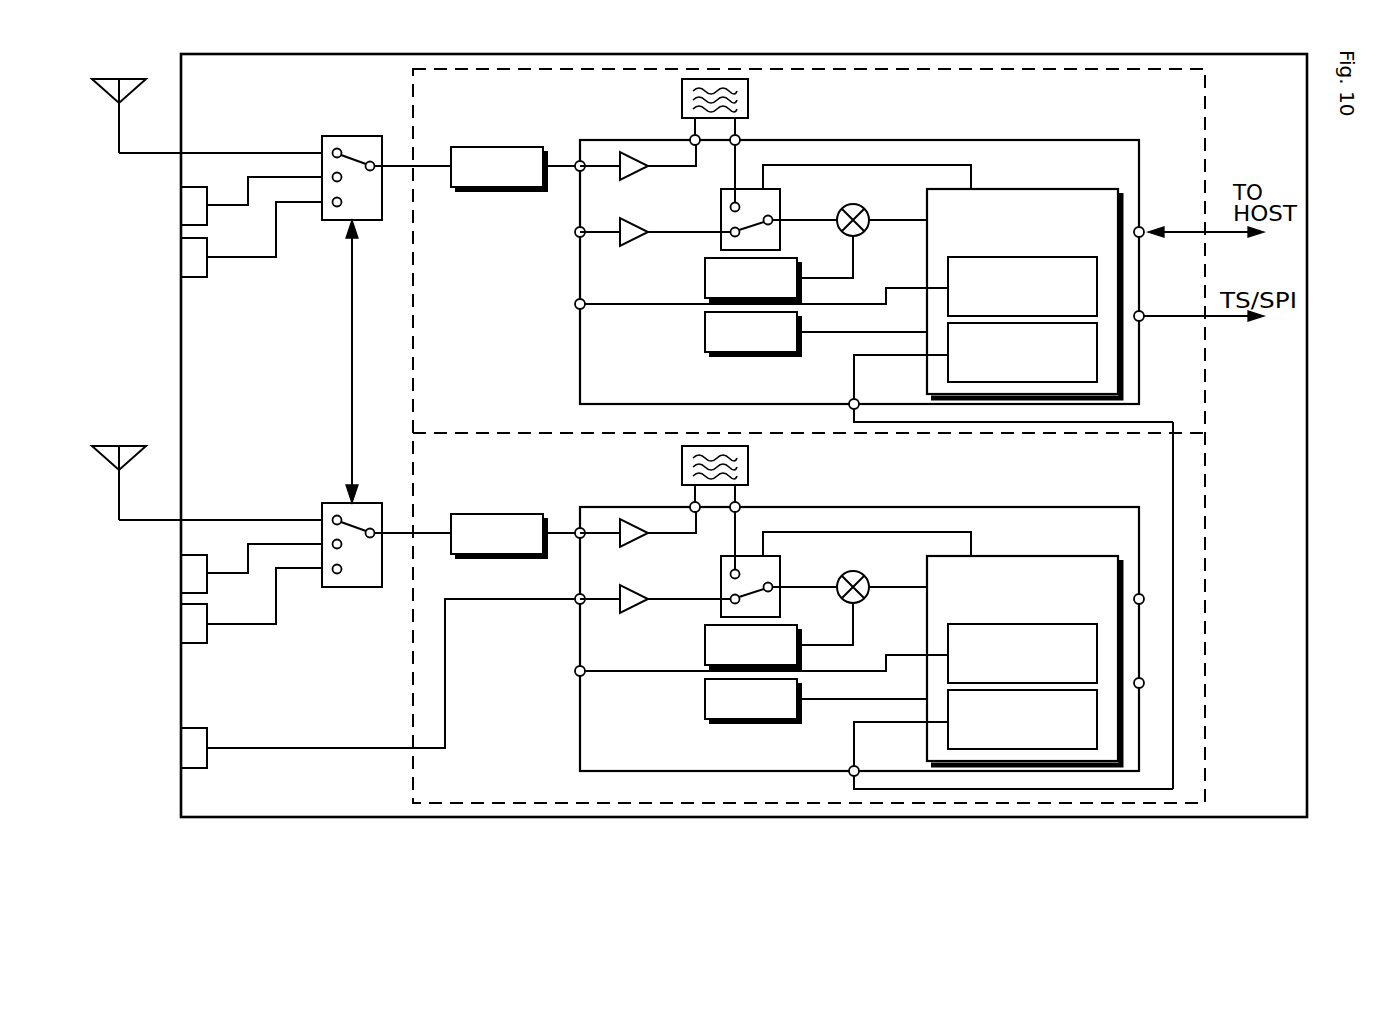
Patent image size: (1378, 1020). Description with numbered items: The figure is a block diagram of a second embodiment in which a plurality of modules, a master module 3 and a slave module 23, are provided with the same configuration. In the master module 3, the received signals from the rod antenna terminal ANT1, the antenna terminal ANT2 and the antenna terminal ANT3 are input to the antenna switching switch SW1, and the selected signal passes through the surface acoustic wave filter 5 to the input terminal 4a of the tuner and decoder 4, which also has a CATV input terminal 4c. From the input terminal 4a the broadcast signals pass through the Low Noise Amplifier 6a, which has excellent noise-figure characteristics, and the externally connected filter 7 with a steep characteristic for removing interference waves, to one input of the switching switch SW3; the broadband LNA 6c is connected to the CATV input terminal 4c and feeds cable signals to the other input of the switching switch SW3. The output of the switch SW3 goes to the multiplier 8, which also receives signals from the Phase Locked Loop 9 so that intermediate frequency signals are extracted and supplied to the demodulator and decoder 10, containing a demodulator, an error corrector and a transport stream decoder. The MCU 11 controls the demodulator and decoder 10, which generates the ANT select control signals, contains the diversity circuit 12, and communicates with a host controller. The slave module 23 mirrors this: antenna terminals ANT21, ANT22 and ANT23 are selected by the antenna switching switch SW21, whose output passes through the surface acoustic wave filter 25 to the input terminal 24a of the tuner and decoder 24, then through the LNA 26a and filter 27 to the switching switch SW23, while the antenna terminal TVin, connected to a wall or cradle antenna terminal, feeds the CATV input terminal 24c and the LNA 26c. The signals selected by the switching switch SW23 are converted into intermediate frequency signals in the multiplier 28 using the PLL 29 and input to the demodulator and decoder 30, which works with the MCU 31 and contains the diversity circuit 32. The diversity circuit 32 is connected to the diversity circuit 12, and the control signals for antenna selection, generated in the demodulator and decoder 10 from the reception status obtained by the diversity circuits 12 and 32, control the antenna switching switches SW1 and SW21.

The master module 3 is at (412, 107).
The tuner and decoder 4 is at (1064, 140).
The input terminal 4a is at (577, 163).
The CATV input terminal 4c is at (578, 229).
The surface acoustic wave filter 5 is at (499, 143).
The Low Noise Amplifier 6a is at (634, 177).
The LNA 6c is at (634, 244).
The filter 7 is at (752, 97).
The multiplier 8 is at (848, 206).
The Phase Locked Loop 9 is at (705, 278).
The demodulator and decoder 10 is at (1050, 187).
The MCU 11 is at (705, 345).
The diversity circuit 12 is at (946, 363).
The slave module 23 is at (412, 474).
The tuner and decoder 24 is at (862, 626).
The input terminal 24a is at (563, 502).
The CATV input terminal 24c is at (550, 582).
The surface acoustic wave filter 25 is at (515, 518).
The LNA 26a is at (638, 542).
The LNA 26c is at (657, 615).
The filter 27 is at (749, 510).
The multiplier 28 is at (862, 596).
The PLL 29 is at (733, 639).
The demodulator and decoder 30 is at (1024, 647).
The MCU 31 is at (796, 700).
The diversity circuit 32 is at (1011, 739).
The antenna switching switch SW1 is at (330, 136).
The switching switch SW3 is at (719, 210).
The antenna switching switch SW21 is at (352, 531).
The switching switch SW23 is at (805, 574).
The antenna terminal (rod antenna) ANT1 is at (102, 92).
The antenna terminal ANT2 is at (181, 205).
The antenna terminal ANT3 is at (181, 257).
The antenna terminal ANT21 is at (179, 489).
The antenna terminal ANT22 is at (196, 568).
The antenna terminal ANT23 is at (196, 605).
The antenna terminal TVin is at (337, 683).